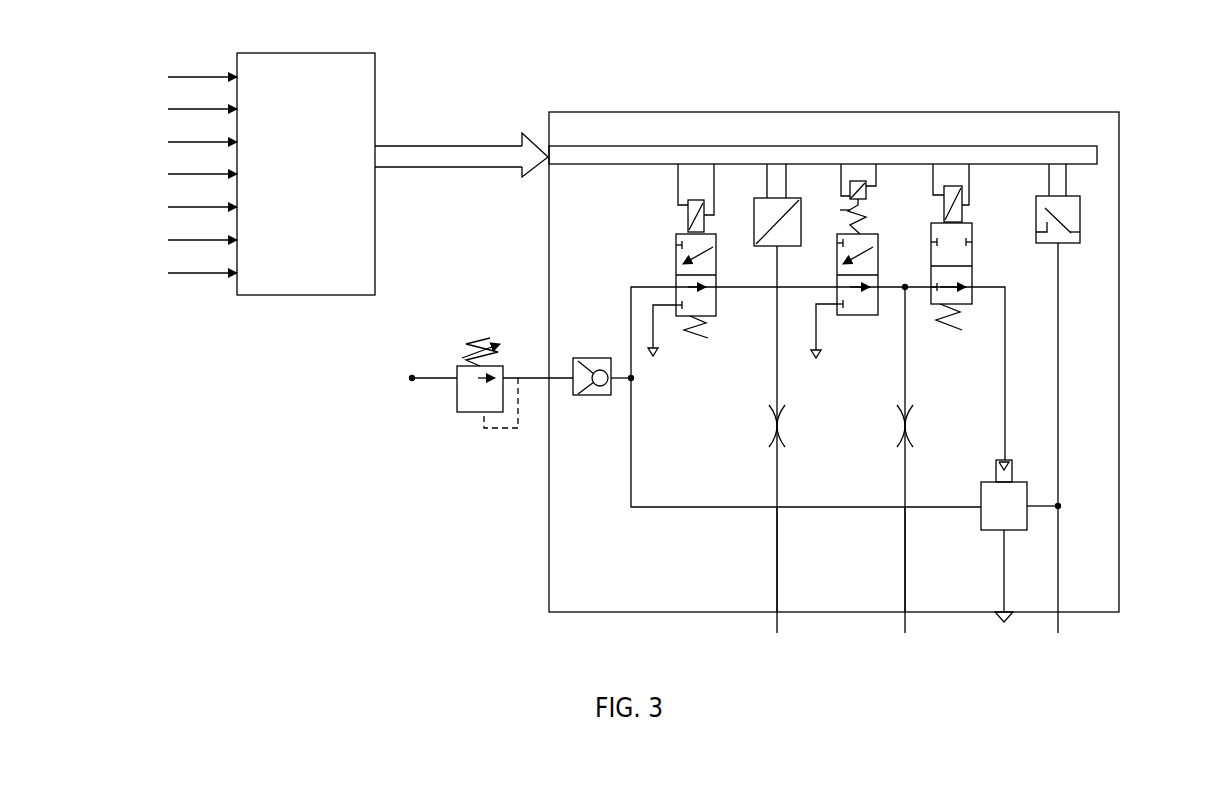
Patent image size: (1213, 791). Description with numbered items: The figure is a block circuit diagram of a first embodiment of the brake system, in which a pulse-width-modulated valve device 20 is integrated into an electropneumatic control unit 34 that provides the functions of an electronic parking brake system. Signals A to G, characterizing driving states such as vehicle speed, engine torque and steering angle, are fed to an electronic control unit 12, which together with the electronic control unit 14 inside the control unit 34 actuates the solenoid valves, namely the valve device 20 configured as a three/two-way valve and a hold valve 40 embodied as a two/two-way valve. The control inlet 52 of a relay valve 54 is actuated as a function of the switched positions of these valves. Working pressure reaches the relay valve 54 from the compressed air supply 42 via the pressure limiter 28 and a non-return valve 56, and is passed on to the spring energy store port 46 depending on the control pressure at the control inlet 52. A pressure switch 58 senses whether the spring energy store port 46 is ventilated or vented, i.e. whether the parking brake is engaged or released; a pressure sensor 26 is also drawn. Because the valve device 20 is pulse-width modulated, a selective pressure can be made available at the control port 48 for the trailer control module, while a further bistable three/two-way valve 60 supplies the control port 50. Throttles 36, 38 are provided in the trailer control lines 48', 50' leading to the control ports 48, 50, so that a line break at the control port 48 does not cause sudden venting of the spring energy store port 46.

The electronic control unit 12 is at (303, 296).
The electronic control unit 14 is at (1000, 146).
The valve device 20 is at (676, 268).
The pressure sensor 26 is at (770, 248).
The pressure limiter 28 is at (468, 414).
The electropneumatic control unit 34 is at (1120, 515).
The throttle 36 is at (770, 412).
The throttle 38 is at (898, 412).
The hold valve 40 is at (931, 236).
The compressed air supply 42 is at (412, 383).
The spring energy store port 46 is at (1062, 622).
The control port 48 is at (751, 452).
The trailer control line 48' is at (748, 559).
The control port 50 is at (880, 472).
The trailer control line 50' is at (877, 559).
The control inlet 52 is at (996, 470).
The relay valve 54 is at (981, 522).
The non-return valve 56 is at (591, 397).
The pressure switch 58 is at (1082, 213).
The 3/2-way valve 60 is at (868, 318).